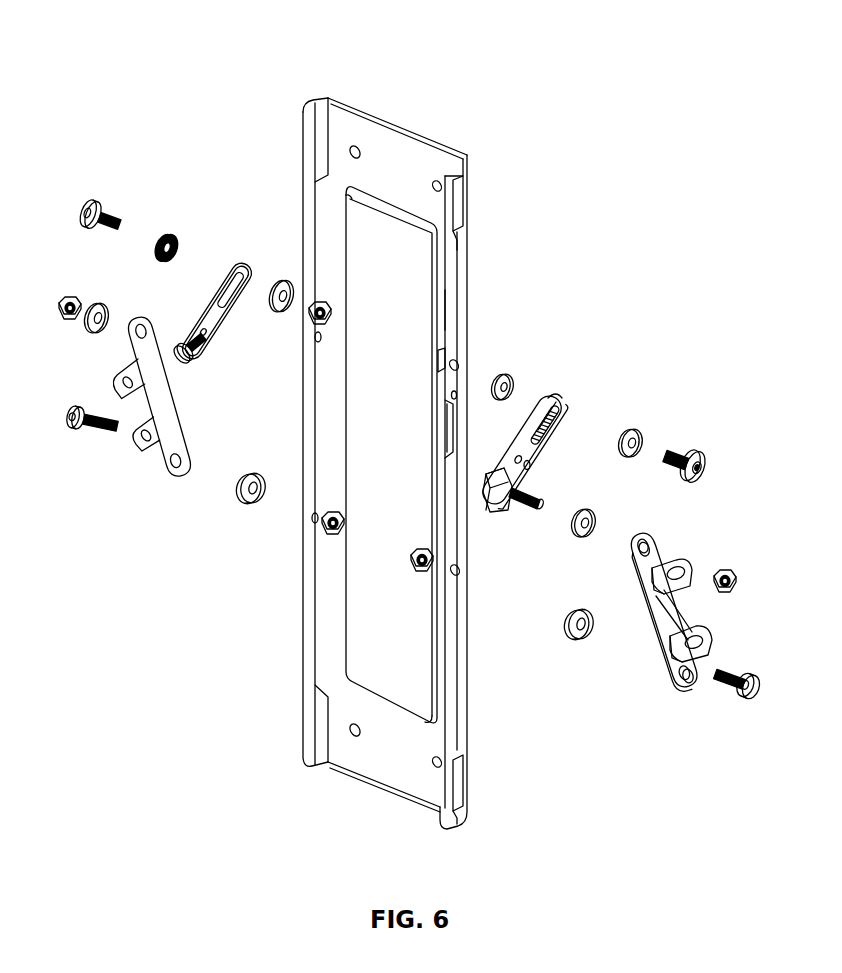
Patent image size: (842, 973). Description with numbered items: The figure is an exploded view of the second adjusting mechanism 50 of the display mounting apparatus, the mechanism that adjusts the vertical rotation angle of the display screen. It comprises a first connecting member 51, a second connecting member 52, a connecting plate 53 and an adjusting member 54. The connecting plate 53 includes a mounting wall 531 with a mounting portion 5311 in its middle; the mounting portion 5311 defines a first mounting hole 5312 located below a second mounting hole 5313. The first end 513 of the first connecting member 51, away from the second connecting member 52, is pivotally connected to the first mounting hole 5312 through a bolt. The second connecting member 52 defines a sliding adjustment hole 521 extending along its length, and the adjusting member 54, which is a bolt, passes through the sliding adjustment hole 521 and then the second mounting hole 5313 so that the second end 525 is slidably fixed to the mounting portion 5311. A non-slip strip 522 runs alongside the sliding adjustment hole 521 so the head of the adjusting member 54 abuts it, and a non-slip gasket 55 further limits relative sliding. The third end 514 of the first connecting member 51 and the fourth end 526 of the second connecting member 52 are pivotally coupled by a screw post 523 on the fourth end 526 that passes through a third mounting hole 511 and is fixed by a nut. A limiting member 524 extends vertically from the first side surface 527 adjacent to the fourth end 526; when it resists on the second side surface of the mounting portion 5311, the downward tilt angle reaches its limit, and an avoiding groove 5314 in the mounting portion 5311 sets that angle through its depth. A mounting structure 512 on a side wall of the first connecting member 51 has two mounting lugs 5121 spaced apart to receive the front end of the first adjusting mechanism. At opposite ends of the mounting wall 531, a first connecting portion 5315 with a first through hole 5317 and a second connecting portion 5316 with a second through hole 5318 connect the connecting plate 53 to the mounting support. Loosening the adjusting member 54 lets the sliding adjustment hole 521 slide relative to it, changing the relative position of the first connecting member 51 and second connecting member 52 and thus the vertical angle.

The second adjusting mechanism 50 is at (377, 52).
The first connecting member 51 is at (663, 548).
The third mounting hole 511 is at (643, 550).
The mounting structure 512 is at (559, 658).
The mounting lug 5121 is at (690, 656).
The first end 513 is at (683, 684).
The third end 514 is at (647, 537).
The second connecting member 52 is at (558, 405).
The sliding adjustment hole 521 is at (553, 418).
The non-slip strip 522 is at (548, 438).
The screw post 523 is at (541, 498).
The limiting member 524 is at (497, 482).
The second end 525 is at (553, 397).
The fourth end 526 is at (500, 492).
The first side surface 527 is at (535, 423).
The connecting plate 53 is at (425, 137).
The mounting wall 531 is at (463, 311).
The mounting portion 5311 is at (545, 434).
The first mounting hole 5312 is at (462, 570).
The second mounting hole 5313 is at (461, 361).
The avoiding groove 5314 is at (447, 447).
The first connecting portion 5315 is at (460, 238).
The second connecting portion 5316 is at (466, 818).
The first through hole 5317 is at (457, 201).
The second through hole 5318 is at (457, 778).
The adjusting member 54 is at (699, 449).
The non-slip gasket 55 is at (640, 428).